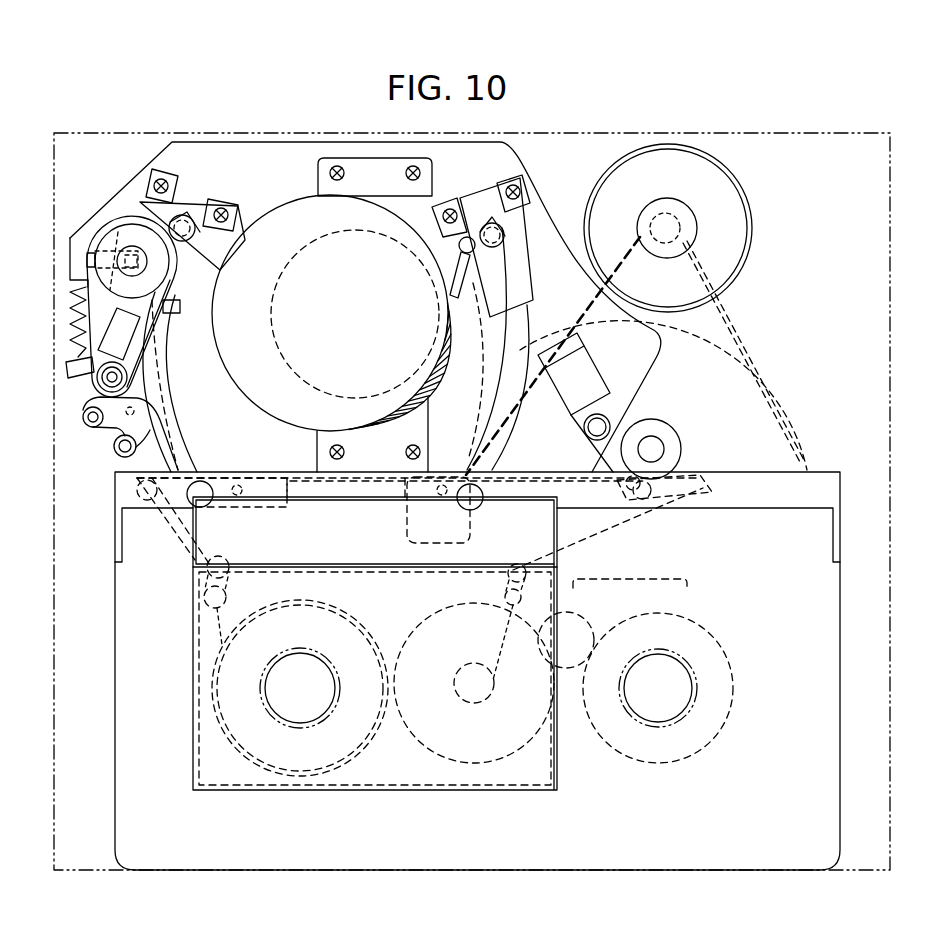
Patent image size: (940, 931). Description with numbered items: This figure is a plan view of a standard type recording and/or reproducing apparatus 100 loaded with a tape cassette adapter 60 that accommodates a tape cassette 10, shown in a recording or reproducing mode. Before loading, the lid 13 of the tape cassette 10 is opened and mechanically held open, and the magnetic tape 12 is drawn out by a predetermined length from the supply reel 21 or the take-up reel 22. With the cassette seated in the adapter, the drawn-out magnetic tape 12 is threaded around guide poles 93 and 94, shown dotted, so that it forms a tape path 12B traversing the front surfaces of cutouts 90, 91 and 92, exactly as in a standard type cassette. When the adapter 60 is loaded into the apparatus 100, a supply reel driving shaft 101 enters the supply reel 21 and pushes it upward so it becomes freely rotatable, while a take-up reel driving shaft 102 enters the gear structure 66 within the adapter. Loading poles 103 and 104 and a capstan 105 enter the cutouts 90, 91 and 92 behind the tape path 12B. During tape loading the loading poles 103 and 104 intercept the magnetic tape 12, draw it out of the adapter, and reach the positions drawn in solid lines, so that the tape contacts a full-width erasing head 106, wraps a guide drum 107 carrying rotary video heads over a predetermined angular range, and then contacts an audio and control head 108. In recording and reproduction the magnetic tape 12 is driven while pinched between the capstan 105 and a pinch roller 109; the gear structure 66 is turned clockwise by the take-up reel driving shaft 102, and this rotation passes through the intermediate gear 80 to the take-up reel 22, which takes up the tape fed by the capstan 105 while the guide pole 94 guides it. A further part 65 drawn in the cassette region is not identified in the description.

The standard type recording and/or reproducing apparatus 100 is at (900, 179).
The tape cassette adapter 60 is at (848, 667).
The tape cassette 10 is at (385, 773).
The supply reel 21 is at (212, 700).
The take-up reel 22 is at (477, 775).
The supply reel driving shaft 101 is at (312, 716).
The take-up reel driving shaft 102 is at (671, 719).
The gear structure 66 is at (709, 653).
The intermediate gear 80 is at (585, 623).
The cassette lid portion 65 is at (630, 580).
The guide drum 107 is at (289, 202).
The magnetic tape 12 is at (166, 306).
The lid 13 is at (524, 495).
The tape path 12B is at (352, 480).
The loading pole 103 is at (178, 224).
The loading pole 104 is at (506, 233).
The full-width erasing head 106 is at (110, 331).
The audio and control head 108 is at (586, 350).
The pinch roller 109 is at (657, 430).
The guide pole 93 is at (137, 490).
The cutout 90 is at (244, 506).
The cutout 91 is at (406, 520).
The cutout 92 is at (624, 488).
The guide pole 94 is at (708, 500).
The capstan 105 is at (642, 515).